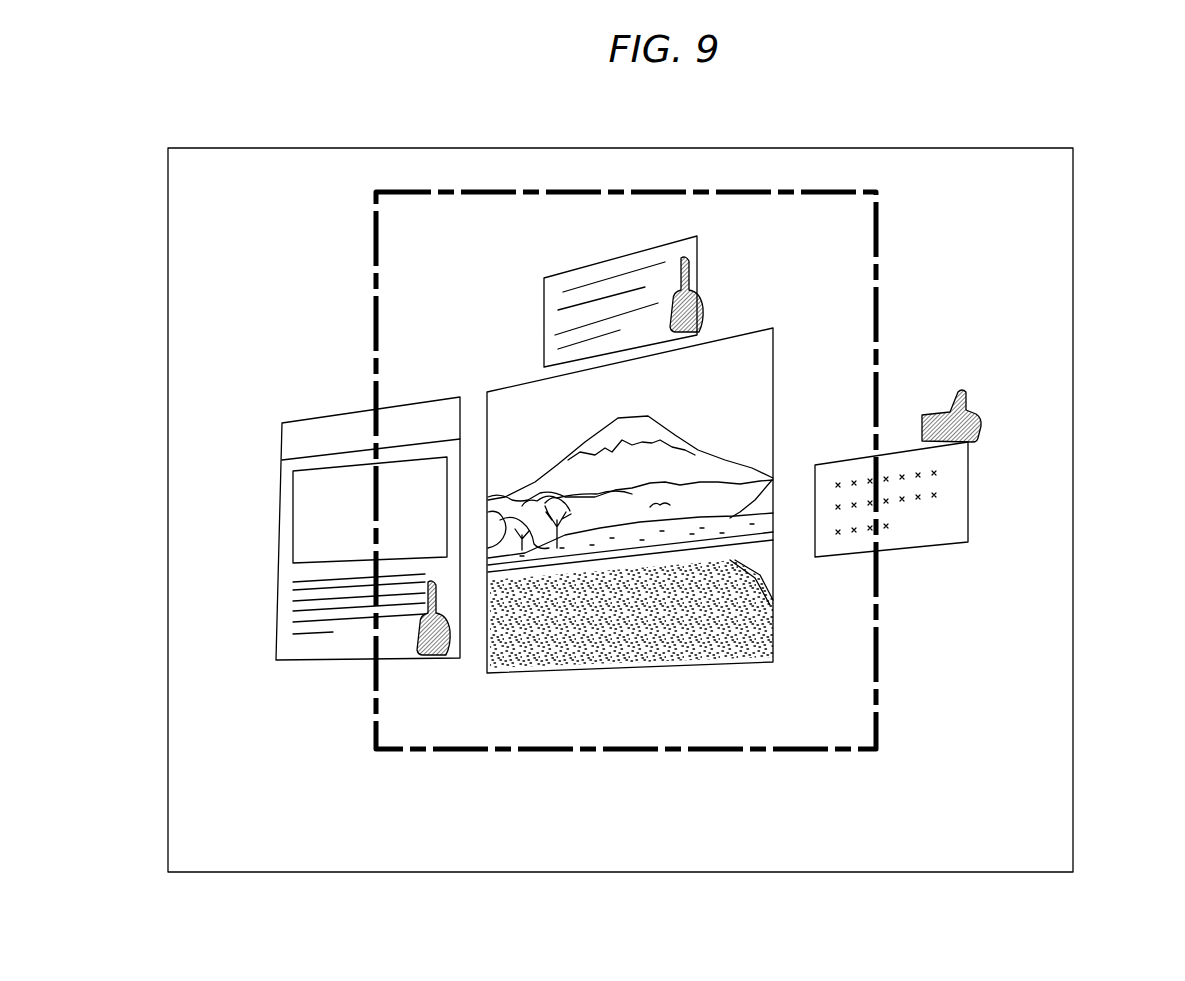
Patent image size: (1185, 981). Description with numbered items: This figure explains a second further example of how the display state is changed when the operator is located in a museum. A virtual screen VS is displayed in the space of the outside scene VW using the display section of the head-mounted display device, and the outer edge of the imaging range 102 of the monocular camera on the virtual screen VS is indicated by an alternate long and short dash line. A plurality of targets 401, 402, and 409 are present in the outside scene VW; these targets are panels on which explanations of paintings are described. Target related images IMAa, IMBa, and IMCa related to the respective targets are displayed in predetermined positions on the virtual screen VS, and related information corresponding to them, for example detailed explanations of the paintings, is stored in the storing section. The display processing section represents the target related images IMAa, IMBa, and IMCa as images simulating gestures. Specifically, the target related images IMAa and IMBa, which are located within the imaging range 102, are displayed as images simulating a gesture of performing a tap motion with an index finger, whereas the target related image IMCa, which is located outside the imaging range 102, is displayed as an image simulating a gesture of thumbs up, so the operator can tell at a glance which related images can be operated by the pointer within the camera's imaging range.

The virtual screen VS is at (1077, 215).
The outside scene VW is at (931, 185).
The imaging range 102 is at (675, 752).
The target 401 is at (572, 275).
The target related image IMAa is at (677, 257).
The target 402 is at (312, 647).
The target related image IMBa is at (443, 660).
The target 409 is at (942, 520).
The target related image IMCa is at (970, 412).